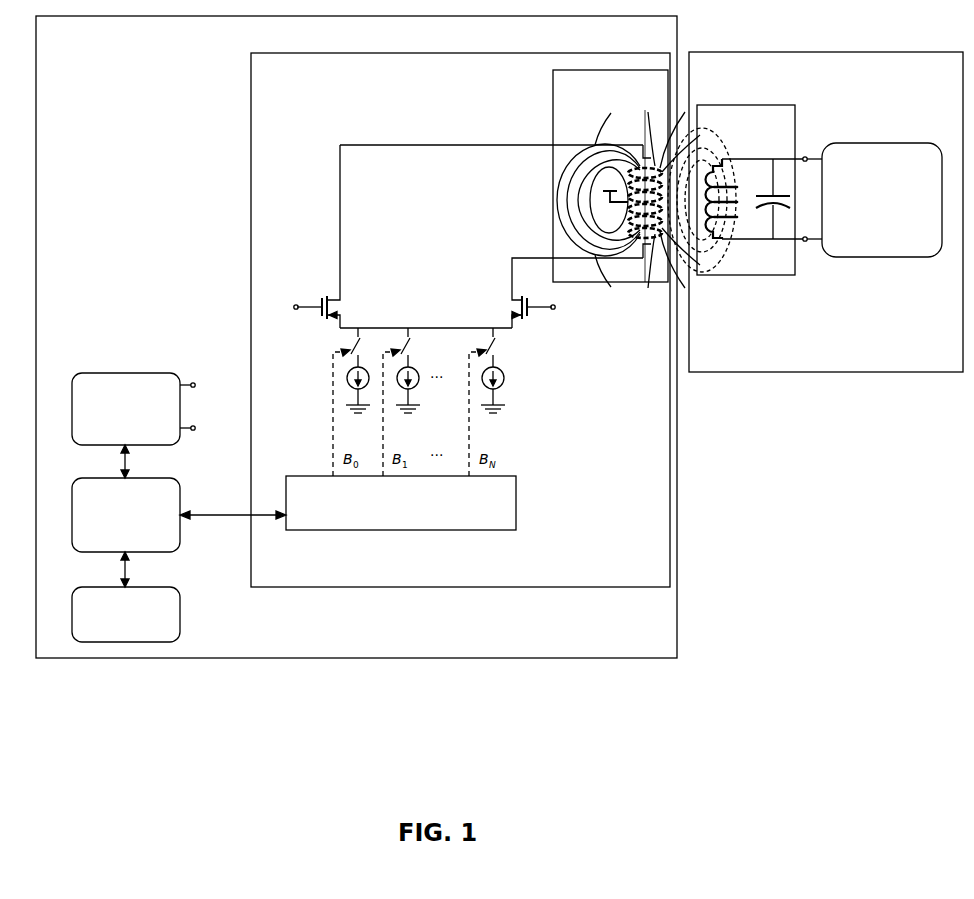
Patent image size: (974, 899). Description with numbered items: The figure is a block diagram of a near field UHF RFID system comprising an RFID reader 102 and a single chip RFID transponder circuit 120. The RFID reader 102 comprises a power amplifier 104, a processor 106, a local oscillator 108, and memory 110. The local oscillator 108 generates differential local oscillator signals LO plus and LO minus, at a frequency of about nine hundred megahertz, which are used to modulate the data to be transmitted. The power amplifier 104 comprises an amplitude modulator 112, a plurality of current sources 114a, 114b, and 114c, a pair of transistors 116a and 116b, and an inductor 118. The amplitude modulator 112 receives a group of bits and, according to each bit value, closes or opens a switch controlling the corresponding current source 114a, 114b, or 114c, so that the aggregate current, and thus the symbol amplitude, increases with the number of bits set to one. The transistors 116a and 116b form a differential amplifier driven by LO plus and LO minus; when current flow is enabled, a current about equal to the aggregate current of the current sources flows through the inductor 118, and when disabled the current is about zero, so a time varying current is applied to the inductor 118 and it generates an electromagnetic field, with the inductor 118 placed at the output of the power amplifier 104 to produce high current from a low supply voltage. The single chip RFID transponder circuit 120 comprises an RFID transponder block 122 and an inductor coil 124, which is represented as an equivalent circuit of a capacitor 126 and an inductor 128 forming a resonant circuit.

The RFID reader 102 is at (654, 651).
The power amplifier 104 is at (646, 578).
The processor 106 is at (114, 533).
The local oscillator 108 is at (114, 437).
The memory 110 is at (114, 632).
The amplitude modulator 112 is at (503, 525).
The current source 114a is at (396, 343).
The current source 114b is at (454, 357).
The current source 114c is at (535, 359).
The transistor 116a is at (387, 282).
The transistor 116b is at (511, 309).
The inductor 118 is at (620, 95).
The single chip RFID transponder circuit 120 is at (941, 362).
The RFID transponder block 122 is at (923, 250).
The inductor coil 124 is at (781, 265).
The capacitor 126 is at (764, 193).
The inductor 128 is at (715, 166).